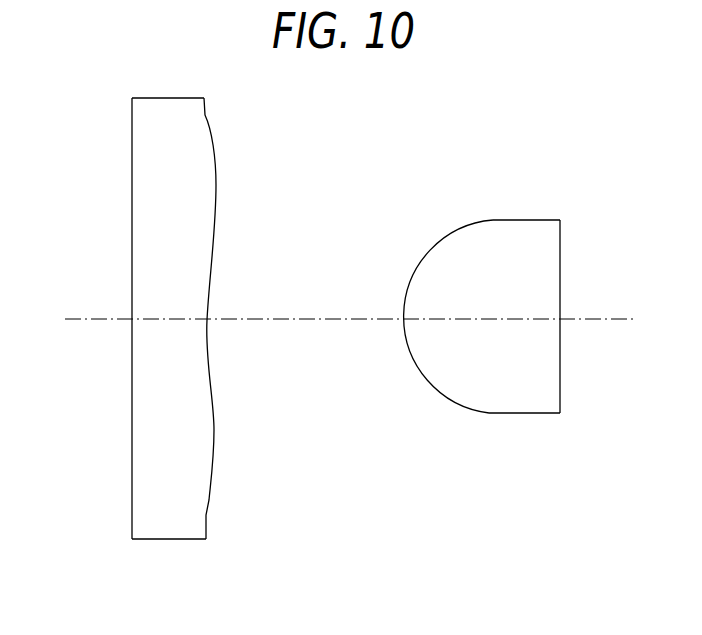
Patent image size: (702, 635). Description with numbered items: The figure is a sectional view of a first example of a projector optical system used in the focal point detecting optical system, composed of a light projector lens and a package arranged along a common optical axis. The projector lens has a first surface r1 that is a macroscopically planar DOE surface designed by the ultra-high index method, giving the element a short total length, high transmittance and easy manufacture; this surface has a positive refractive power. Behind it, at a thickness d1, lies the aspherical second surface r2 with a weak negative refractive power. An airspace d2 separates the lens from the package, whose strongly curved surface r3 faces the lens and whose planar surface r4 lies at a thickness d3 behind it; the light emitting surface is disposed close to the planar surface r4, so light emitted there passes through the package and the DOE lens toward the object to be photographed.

The DOE surface DOE is at (140, 344).
The first surface r1 is at (131, 522).
The second surface r2 is at (212, 498).
The third surface r3 is at (450, 400).
The fourth surface r4 is at (561, 392).
The first thickness d1 is at (163, 322).
The second airspace d2 is at (311, 321).
The third thickness d3 is at (489, 320).